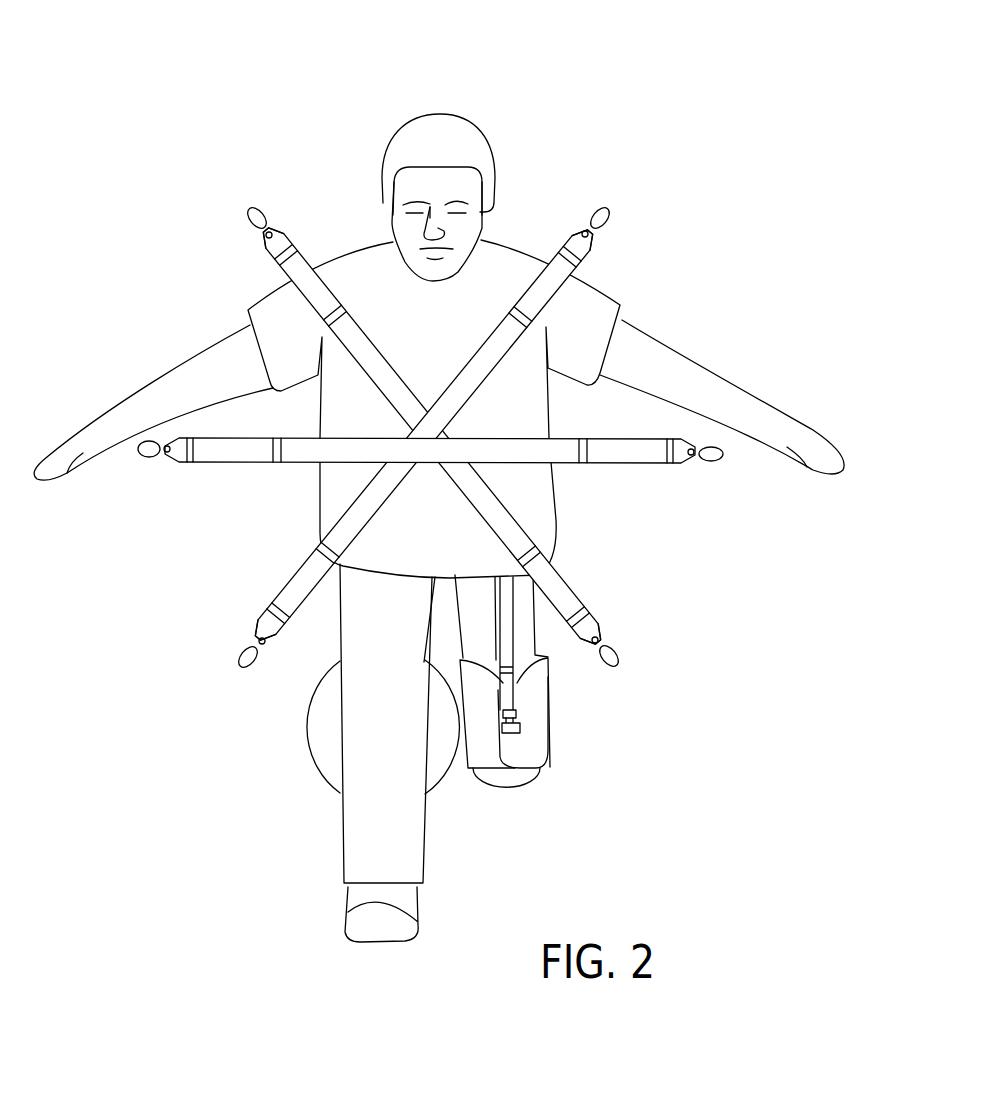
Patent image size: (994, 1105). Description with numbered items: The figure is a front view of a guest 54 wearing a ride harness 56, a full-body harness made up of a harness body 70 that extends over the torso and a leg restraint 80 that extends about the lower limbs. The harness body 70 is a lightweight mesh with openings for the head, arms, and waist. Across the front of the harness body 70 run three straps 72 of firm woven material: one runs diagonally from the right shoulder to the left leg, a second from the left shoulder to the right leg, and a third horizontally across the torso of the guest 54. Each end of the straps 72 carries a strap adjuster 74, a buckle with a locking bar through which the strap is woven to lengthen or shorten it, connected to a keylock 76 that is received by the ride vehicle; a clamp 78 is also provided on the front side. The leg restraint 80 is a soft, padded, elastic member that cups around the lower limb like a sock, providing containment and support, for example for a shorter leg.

The guest 54 is at (500, 86).
The ride harness 56 is at (439, 528).
The harness body 70 is at (538, 495).
The strap 72 is at (305, 578).
The strap adjuster 74 is at (262, 618).
The keylock 76 is at (253, 670).
The clamp 78 is at (350, 320).
The leg restraint 80 is at (533, 703).